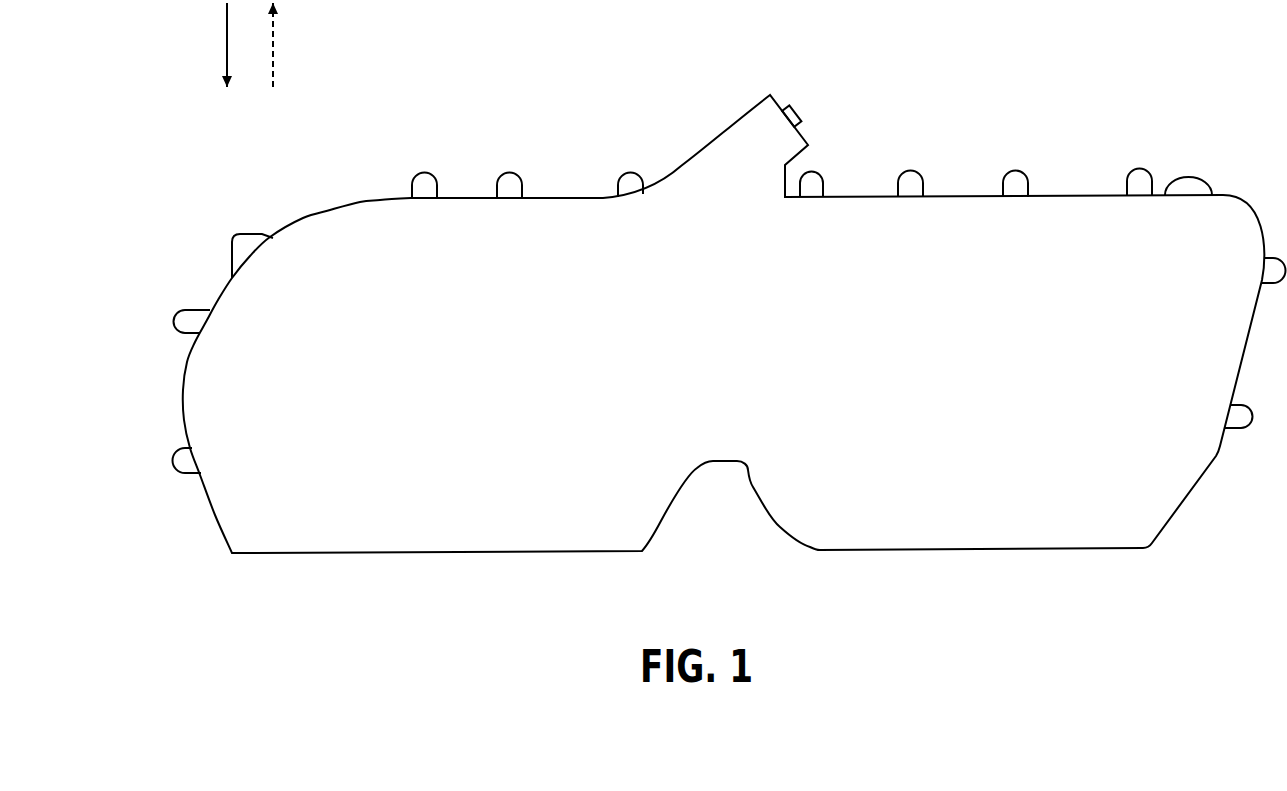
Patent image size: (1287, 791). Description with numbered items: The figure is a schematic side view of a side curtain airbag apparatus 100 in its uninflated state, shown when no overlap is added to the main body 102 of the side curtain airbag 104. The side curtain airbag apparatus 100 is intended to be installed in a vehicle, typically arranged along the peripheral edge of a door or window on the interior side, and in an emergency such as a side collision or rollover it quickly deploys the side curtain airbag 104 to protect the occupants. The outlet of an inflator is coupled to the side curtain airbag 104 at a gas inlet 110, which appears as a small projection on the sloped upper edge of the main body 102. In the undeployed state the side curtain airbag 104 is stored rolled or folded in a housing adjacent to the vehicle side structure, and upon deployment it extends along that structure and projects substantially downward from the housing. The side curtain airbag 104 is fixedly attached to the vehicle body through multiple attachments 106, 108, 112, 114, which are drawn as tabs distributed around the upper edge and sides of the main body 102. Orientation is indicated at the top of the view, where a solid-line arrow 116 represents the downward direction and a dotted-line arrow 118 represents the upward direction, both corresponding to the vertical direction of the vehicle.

The side curtain airbag apparatus 100 is at (1000, 40).
The main body 102 is at (333, 267).
The side curtain airbag 104 is at (567, 195).
The attachment 106 is at (228, 238).
The attachment 108 is at (430, 172).
The gas inlet 110 is at (805, 102).
The attachment 112 is at (915, 162).
The attachment 114 is at (1020, 160).
The solid-line arrow 116 is at (223, 52).
The dotted-line arrow 118 is at (277, 47).